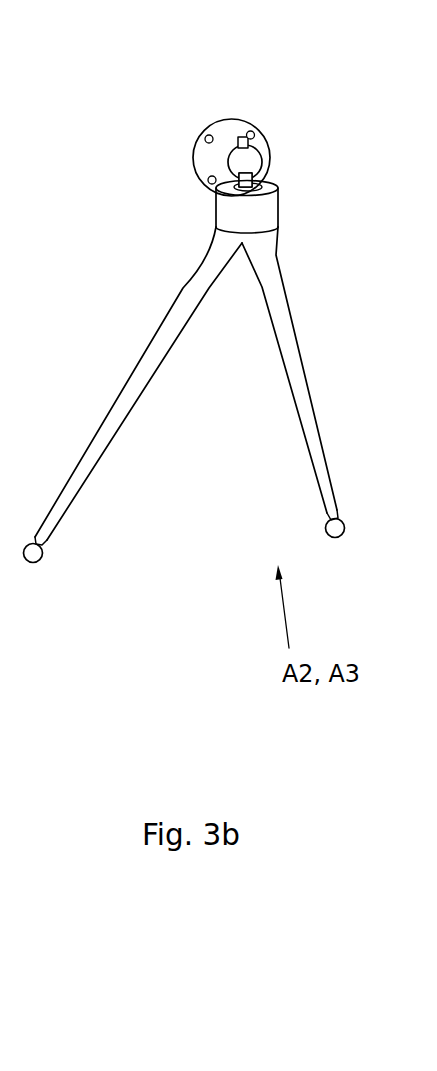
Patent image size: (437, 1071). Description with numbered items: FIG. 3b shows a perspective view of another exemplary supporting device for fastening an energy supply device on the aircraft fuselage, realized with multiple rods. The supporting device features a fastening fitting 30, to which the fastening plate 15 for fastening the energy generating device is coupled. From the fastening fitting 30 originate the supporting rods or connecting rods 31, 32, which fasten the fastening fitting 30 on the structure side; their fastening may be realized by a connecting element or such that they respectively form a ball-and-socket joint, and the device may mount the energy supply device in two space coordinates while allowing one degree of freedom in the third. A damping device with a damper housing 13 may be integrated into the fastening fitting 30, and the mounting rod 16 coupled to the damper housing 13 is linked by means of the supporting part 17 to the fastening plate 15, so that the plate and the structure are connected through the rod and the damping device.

The damper housing 13 is at (268, 201).
The fastening plate on the supply device side 15 is at (207, 155).
The mounting rod 16 is at (262, 172).
The supporting part 17 is at (253, 139).
The fastening fitting 30 is at (224, 351).
The connecting rod 31 is at (302, 408).
The connecting rod 32 is at (160, 363).